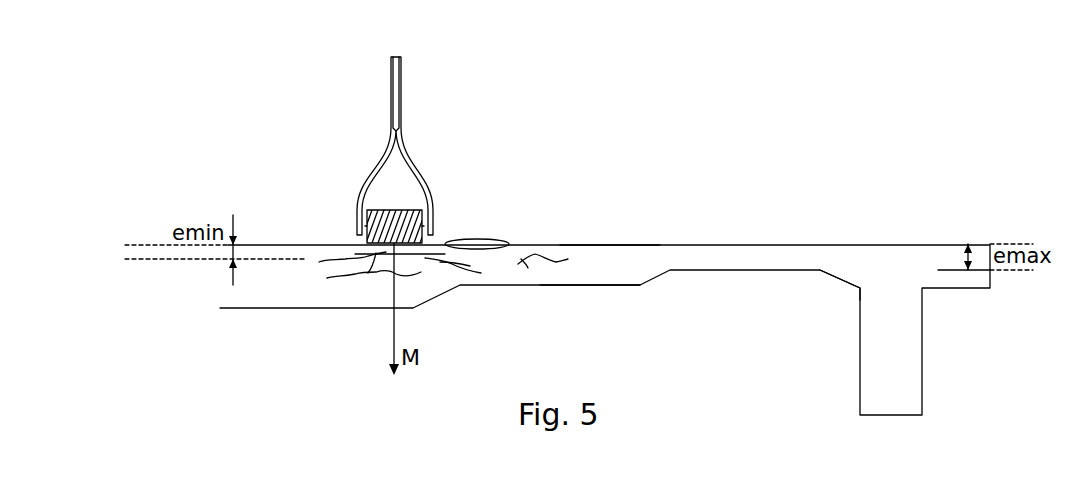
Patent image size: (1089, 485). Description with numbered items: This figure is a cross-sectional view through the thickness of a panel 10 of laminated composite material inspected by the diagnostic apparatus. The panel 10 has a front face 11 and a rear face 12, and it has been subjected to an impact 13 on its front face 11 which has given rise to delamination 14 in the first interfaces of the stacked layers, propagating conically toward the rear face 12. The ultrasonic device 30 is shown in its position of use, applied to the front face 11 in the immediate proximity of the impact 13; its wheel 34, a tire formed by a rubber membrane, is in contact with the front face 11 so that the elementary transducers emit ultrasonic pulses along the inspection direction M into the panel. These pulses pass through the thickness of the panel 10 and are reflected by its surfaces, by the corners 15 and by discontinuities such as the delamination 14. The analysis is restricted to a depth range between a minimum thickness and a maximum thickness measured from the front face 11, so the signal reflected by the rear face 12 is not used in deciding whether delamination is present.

The panel 10 is at (740, 225).
The front face 11 is at (600, 245).
The rear face 12 is at (594, 287).
The impact 13 is at (478, 240).
The delamination 14 is at (362, 284).
The corners 15 is at (837, 278).
The ultrasonic device 30 is at (443, 125).
The wheel 34 is at (395, 210).